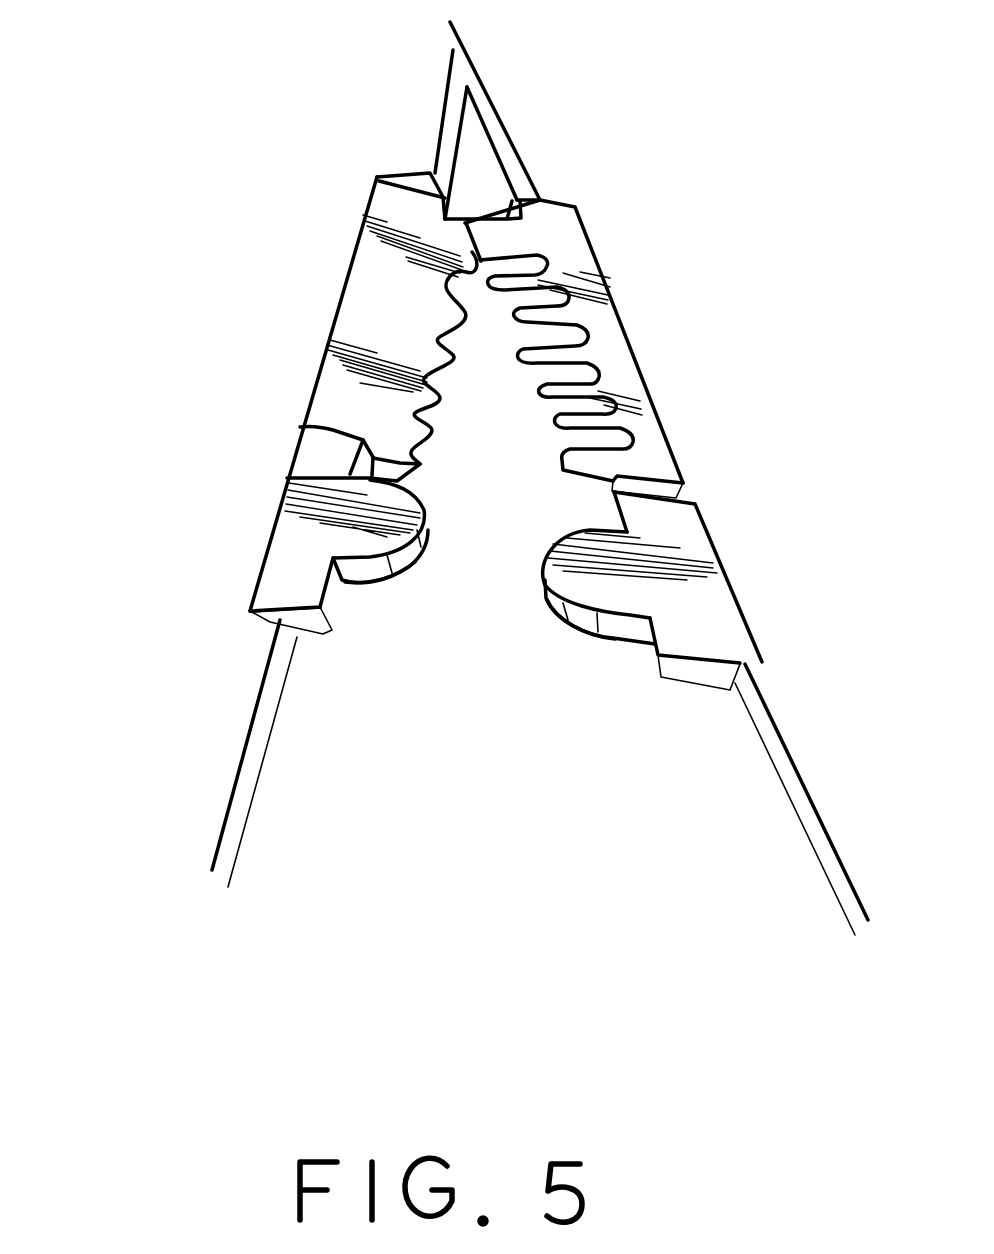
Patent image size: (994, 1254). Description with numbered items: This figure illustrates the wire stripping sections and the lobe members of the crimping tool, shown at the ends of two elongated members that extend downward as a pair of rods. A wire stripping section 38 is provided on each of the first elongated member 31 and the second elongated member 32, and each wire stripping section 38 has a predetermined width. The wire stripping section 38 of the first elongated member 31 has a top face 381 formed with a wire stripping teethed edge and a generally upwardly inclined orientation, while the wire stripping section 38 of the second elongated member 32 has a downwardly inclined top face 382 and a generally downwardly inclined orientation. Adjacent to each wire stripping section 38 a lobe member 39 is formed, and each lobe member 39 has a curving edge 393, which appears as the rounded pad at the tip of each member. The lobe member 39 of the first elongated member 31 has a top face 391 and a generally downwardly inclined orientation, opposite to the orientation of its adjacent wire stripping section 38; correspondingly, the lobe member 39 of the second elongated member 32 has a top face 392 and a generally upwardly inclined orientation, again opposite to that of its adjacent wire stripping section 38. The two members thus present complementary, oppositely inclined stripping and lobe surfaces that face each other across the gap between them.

The first elongated member 31 is at (792, 808).
The second elongated member 32 is at (247, 827).
The wire stripping section 38 is at (623, 322).
The top face 381 is at (585, 403).
The downwardly inclined top face 382 is at (358, 271).
The lobe member 39 is at (330, 608).
The top face 391 is at (595, 585).
The top face 392 is at (373, 538).
The curving edge 393 is at (412, 570).